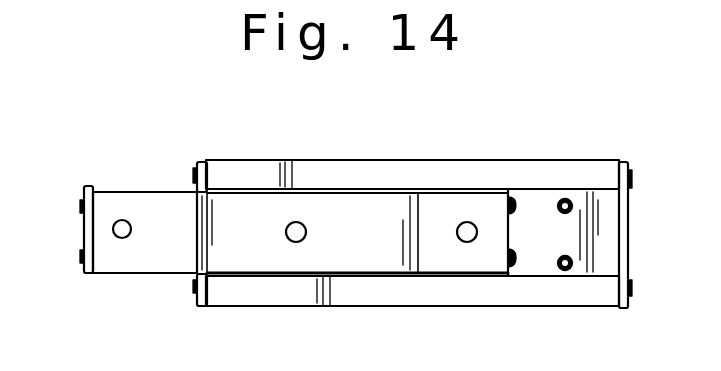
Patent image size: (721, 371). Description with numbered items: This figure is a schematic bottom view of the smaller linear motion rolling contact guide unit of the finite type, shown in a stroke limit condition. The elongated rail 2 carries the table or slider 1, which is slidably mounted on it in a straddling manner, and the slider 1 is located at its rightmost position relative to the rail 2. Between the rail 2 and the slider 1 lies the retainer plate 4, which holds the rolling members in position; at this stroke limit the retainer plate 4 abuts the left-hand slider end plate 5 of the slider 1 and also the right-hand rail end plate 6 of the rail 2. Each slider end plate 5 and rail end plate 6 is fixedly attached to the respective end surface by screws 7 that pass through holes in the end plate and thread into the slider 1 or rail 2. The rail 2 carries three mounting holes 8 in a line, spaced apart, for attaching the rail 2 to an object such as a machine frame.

The slider 1 is at (365, 160).
The rail 2 is at (170, 275).
The retainer plate 4 is at (260, 190).
The slider end plate 5 is at (197, 168).
The rail end plate 6 is at (83, 272).
The screws 7 is at (193, 177).
The mounting holes 8 is at (122, 239).